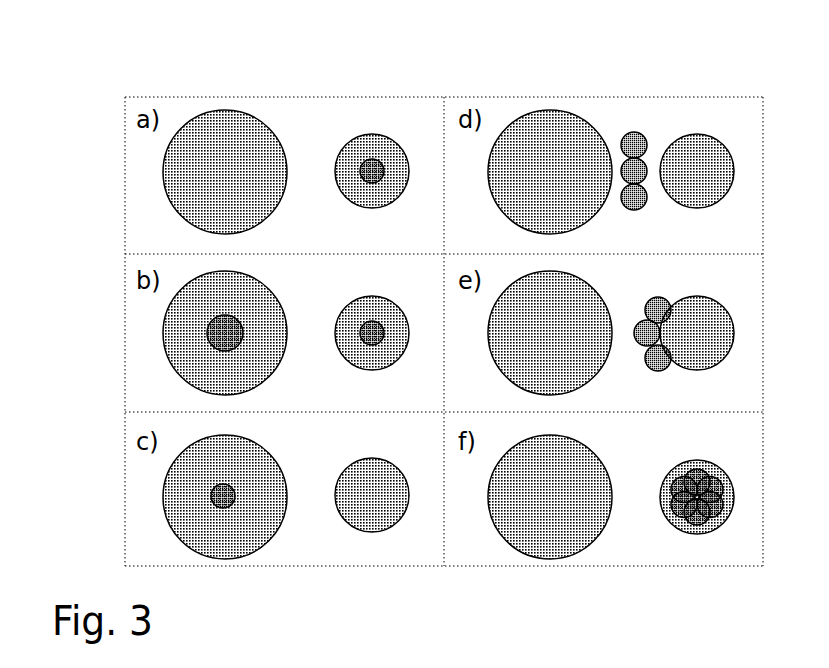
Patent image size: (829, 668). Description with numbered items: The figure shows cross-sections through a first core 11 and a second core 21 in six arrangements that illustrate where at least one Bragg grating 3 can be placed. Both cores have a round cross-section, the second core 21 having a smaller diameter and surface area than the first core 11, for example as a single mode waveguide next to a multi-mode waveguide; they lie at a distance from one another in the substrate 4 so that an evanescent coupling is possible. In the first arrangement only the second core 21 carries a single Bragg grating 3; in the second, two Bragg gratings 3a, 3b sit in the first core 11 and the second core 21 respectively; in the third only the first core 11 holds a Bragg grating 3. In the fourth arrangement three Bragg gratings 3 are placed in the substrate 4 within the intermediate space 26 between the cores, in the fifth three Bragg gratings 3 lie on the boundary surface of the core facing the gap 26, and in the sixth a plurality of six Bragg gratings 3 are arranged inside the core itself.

The first core 11 is at (197, 212).
The second core 21 is at (358, 202).
The Bragg grating 3 is at (377, 162).
The Bragg grating 3a is at (205, 335).
The Bragg grating 3b is at (377, 328).
The substrate 4 is at (375, 110).
The intermediate space 26 is at (622, 140).